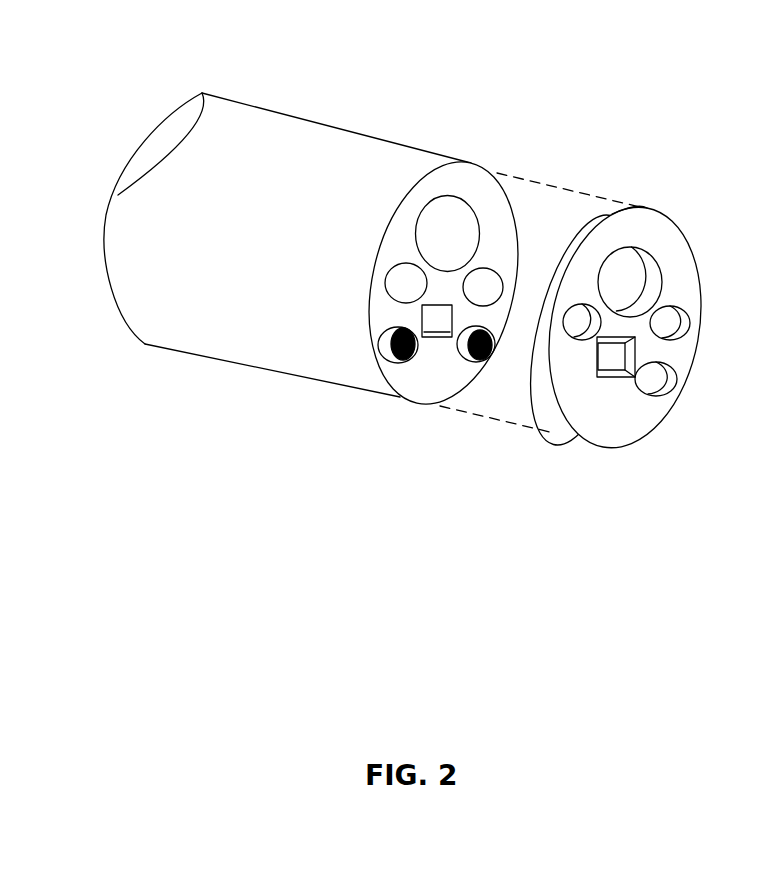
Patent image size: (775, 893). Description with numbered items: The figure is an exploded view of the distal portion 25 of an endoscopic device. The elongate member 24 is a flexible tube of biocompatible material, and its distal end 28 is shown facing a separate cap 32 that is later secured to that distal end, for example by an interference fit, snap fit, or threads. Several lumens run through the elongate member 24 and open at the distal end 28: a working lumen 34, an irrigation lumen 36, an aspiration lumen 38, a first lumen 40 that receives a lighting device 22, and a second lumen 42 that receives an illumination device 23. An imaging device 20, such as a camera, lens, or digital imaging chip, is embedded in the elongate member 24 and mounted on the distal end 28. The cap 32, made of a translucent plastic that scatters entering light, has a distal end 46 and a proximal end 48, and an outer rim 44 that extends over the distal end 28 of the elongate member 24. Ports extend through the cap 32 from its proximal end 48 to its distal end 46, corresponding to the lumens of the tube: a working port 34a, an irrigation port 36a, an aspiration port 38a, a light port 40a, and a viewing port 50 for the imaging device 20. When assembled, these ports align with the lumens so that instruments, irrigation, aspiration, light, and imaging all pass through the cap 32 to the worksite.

The imaging device 20 is at (447, 337).
The lighting device 22 is at (487, 345).
The illumination device 23 is at (397, 348).
The elongate member 24 is at (253, 106).
The distal portion 25 is at (103, 72).
The distal end 28 is at (466, 163).
The cap 32 is at (657, 192).
The working lumen 34 is at (479, 228).
The working port 34a is at (640, 284).
The irrigation lumen 36 is at (488, 286).
The irrigation port 36a is at (690, 335).
The aspiration lumen 38 is at (403, 286).
The aspiration port 38a is at (578, 330).
The first lumen 40 is at (464, 340).
The light port 40a is at (642, 405).
The second lumen 42 is at (386, 348).
The outer rim 44 is at (616, 211).
The distal end 46 is at (664, 240).
The proximal end 48 is at (578, 226).
The viewing port 50 is at (620, 371).